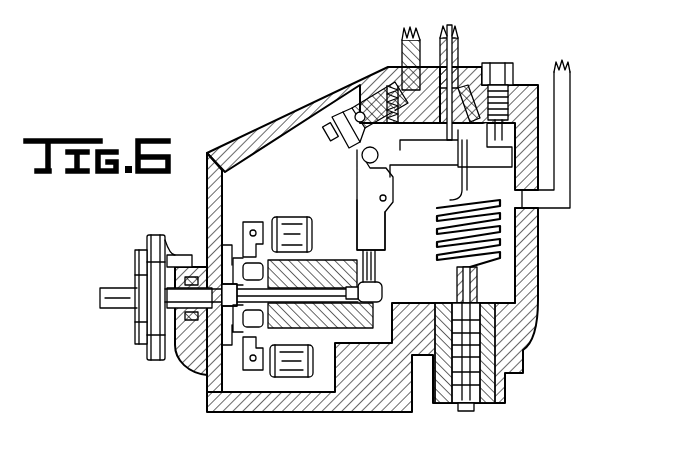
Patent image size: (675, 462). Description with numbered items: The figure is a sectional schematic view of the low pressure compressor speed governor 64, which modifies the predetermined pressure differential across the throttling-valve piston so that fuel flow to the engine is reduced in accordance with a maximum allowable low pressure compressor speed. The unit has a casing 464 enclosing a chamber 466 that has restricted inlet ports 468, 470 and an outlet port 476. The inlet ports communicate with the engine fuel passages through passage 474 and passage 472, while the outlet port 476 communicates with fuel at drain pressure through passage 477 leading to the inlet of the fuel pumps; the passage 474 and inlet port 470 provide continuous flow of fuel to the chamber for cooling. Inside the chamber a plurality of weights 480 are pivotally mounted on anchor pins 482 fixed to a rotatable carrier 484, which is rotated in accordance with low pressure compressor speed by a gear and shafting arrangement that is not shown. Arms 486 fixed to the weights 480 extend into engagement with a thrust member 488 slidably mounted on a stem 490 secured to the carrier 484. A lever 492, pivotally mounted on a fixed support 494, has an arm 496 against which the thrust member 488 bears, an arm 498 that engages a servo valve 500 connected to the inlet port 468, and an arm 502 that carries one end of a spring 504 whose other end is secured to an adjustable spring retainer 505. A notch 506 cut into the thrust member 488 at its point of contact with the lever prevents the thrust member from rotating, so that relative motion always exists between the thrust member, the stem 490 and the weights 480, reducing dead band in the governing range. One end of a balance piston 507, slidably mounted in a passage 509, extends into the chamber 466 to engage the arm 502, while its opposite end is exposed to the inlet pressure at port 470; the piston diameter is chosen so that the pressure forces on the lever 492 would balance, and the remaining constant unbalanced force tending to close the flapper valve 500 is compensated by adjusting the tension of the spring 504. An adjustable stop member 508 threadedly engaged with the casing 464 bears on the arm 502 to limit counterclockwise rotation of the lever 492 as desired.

The low pressure compressor speed governor 64 is at (264, 121).
The casing 464 is at (530, 320).
The chamber 466 is at (216, 192).
The restricted inlet port 468 is at (401, 77).
The restricted inlet port 470 is at (458, 78).
The passage 472 is at (402, 45).
The passage 474 is at (460, 33).
The outlet port 476 is at (540, 233).
The passage 477 is at (570, 162).
The weights 480 is at (290, 226).
The anchor pins 482 is at (250, 361).
The rotatable carrier 484 is at (230, 343).
The arms 486 is at (232, 268).
The thrust member 488 is at (318, 270).
The stem 490 is at (357, 268).
The lever 492 is at (378, 185).
The fixed support 494 is at (362, 158).
The arm 496 is at (382, 233).
The arm 498 is at (336, 128).
The servo valve 500 is at (357, 120).
The arm 502 is at (496, 156).
The spring 504 is at (488, 243).
The adjustable spring retainer 505 is at (461, 411).
The notch 506 is at (384, 292).
The balance piston 507 is at (444, 132).
The adjustable stop member 508 is at (506, 66).
The passage 509 is at (458, 145).